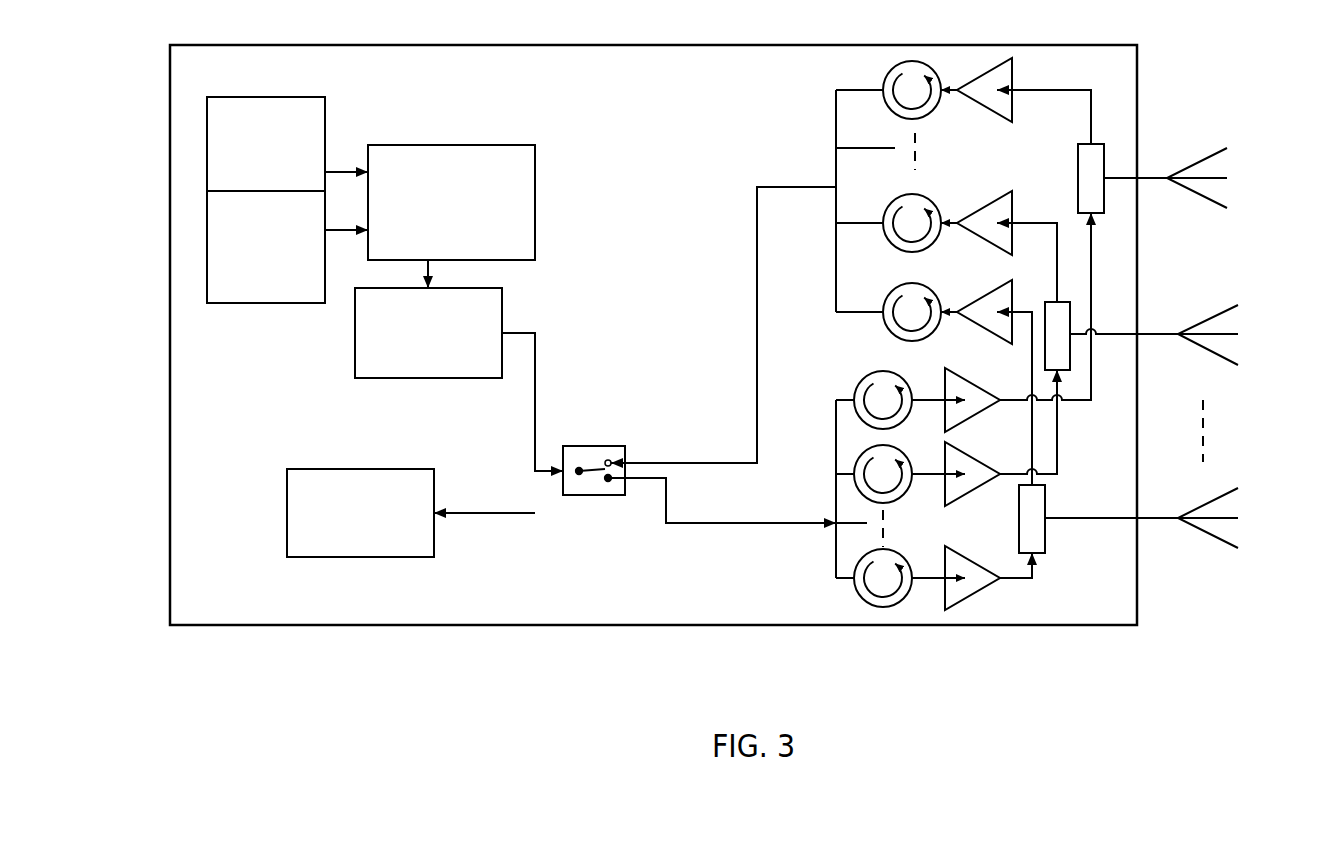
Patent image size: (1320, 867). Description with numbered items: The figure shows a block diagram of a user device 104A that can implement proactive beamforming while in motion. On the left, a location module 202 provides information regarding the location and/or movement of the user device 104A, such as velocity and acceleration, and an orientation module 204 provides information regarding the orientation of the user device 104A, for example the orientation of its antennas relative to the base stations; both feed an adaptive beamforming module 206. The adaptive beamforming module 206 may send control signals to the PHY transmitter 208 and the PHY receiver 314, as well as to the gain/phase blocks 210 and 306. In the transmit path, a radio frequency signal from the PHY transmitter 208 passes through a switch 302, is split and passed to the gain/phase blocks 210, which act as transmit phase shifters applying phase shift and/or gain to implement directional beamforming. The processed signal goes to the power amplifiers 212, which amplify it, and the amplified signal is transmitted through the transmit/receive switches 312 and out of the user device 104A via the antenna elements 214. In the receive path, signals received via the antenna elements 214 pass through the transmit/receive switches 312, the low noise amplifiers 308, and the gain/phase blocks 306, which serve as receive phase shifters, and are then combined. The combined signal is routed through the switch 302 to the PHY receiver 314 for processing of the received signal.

The user device 104A is at (653, 318).
The location module 202 is at (266, 129).
The orientation module 204 is at (266, 261).
The adaptive beamforming module 206 is at (451, 188).
The PHY transmitter 208 is at (433, 352).
The gain/phase blocks 210 is at (860, 380).
The power amplifiers 212 is at (980, 413).
The antenna elements 214 is at (1229, 332).
The switch 302 is at (614, 453).
The gain/phase blocks 306 is at (933, 108).
The low noise amplifiers 308 is at (1012, 97).
The transmit/receive switches 312 is at (1077, 165).
The PHY receiver 314 is at (360, 498).